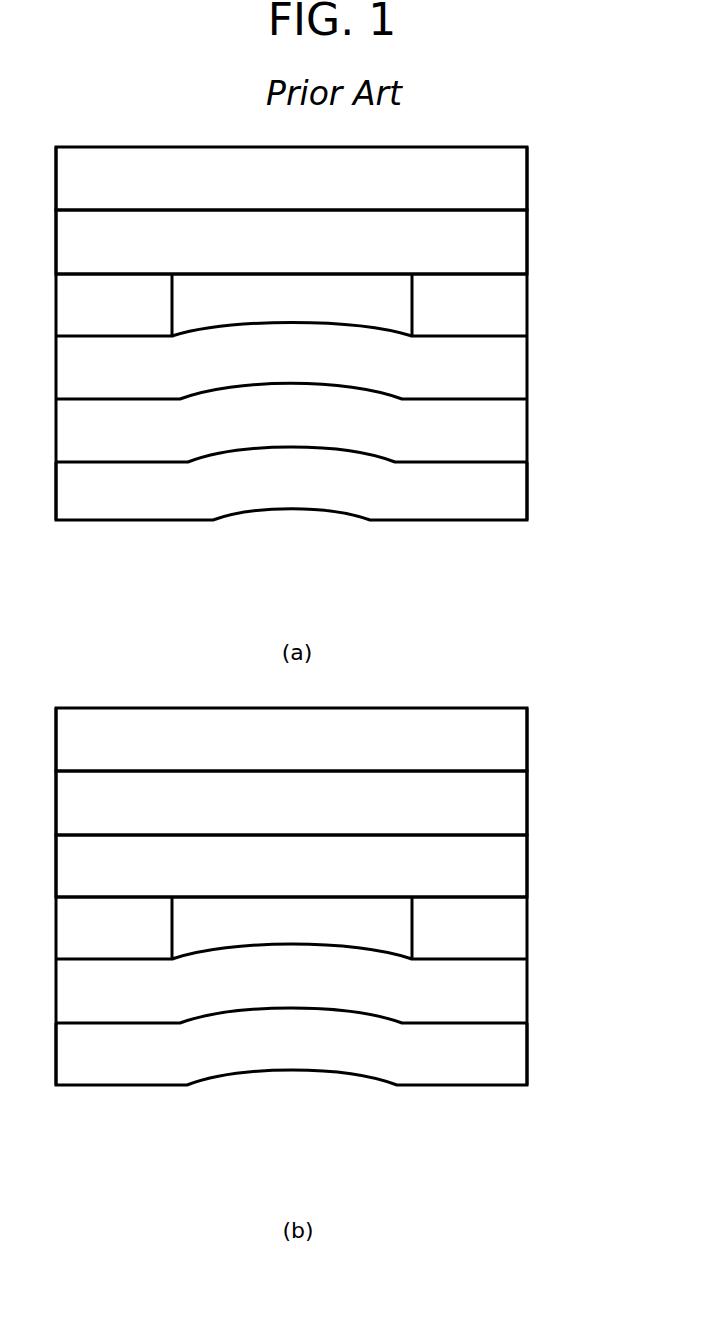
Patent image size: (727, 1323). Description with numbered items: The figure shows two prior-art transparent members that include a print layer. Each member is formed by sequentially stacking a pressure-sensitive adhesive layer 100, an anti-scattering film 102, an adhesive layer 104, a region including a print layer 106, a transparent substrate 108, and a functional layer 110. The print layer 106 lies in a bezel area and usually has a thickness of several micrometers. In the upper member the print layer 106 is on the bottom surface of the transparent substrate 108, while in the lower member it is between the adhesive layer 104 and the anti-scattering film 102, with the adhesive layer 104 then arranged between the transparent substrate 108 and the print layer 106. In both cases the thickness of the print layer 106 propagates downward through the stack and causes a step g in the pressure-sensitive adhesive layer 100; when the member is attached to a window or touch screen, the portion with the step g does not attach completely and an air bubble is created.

The pressure-sensitive adhesive layer 100 is at (527, 493).
The anti-scattering film 102 is at (527, 433).
The adhesive layer 104 is at (527, 373).
The print layer 106 is at (527, 308).
The transparent substrate 108 is at (527, 245).
The functional layer 110 is at (527, 180).
The step g is at (413, 545).